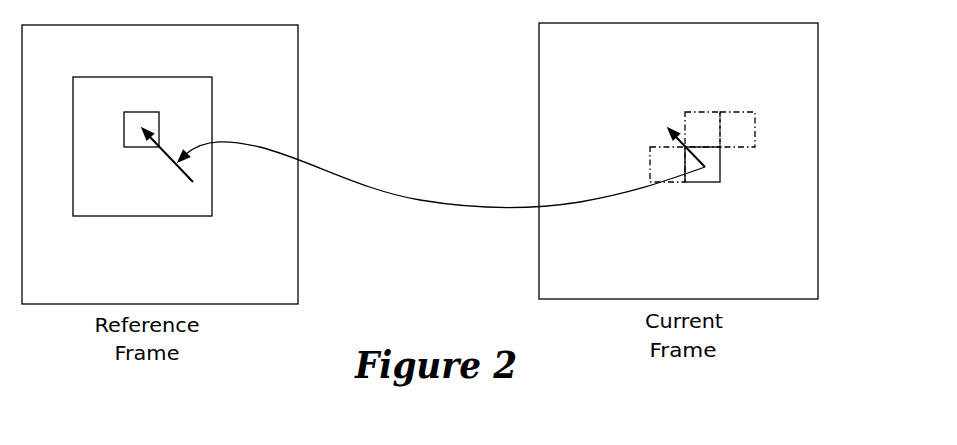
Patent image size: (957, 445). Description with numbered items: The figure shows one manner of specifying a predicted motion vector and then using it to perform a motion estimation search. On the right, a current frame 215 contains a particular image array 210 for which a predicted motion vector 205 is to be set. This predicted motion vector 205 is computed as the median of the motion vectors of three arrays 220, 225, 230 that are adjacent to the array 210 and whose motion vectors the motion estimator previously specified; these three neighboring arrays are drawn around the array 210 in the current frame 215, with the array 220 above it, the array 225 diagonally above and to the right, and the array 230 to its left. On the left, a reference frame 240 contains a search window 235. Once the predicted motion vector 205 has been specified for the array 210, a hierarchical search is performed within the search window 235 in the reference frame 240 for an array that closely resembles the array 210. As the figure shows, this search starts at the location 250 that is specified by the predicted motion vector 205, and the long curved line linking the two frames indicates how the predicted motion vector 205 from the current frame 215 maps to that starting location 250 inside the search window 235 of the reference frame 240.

The predicted motion vector 205 is at (670, 129).
The array 210 is at (737, 174).
The current frame 215 is at (678, 161).
The array 220 is at (692, 112).
The array 225 is at (769, 123).
The array 230 is at (656, 162).
The search window 235 is at (142, 216).
The reference frame 240 is at (220, 304).
The location 250 is at (142, 116).